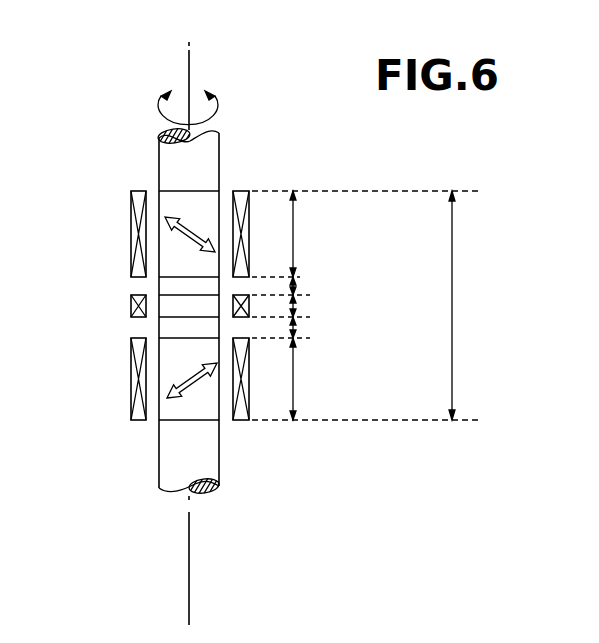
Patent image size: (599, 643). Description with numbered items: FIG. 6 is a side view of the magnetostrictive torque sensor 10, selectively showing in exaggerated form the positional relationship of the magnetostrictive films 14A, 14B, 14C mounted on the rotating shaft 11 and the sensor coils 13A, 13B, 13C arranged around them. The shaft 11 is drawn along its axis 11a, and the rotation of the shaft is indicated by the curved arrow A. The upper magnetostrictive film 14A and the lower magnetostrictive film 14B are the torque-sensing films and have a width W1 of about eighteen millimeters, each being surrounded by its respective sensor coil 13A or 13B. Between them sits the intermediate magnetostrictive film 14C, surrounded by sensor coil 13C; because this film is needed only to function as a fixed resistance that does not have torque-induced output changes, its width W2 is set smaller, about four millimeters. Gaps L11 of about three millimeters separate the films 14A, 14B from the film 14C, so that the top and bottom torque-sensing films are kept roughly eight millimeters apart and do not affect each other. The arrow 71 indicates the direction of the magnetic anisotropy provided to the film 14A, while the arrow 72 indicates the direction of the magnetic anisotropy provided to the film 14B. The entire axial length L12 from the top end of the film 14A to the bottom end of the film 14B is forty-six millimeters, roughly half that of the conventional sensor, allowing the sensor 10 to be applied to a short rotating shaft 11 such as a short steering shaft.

The magnetostrictive torque sensor 10 is at (252, 139).
The rotating shaft 11 is at (170, 150).
The rotation axis 11a is at (190, 60).
The rotation direction A is at (207, 95).
The sensor coil 13A is at (131, 236).
The sensor coil 13B is at (132, 380).
The sensor coil 13C is at (131, 308).
The magnetostrictive film 14A is at (175, 200).
The magnetostrictive film 14B is at (178, 410).
The magnetostrictive film 14C is at (175, 302).
The arrow 71 is at (198, 243).
The arrow 72 is at (198, 383).
The width dimension of magnetostrictive films 14A, 14B W1 is at (293, 235).
The width dimension of magnetostrictive film 14C W2 is at (293, 306).
The gap L11 is at (293, 284).
The entire length in the axial direction L12 is at (452, 305).